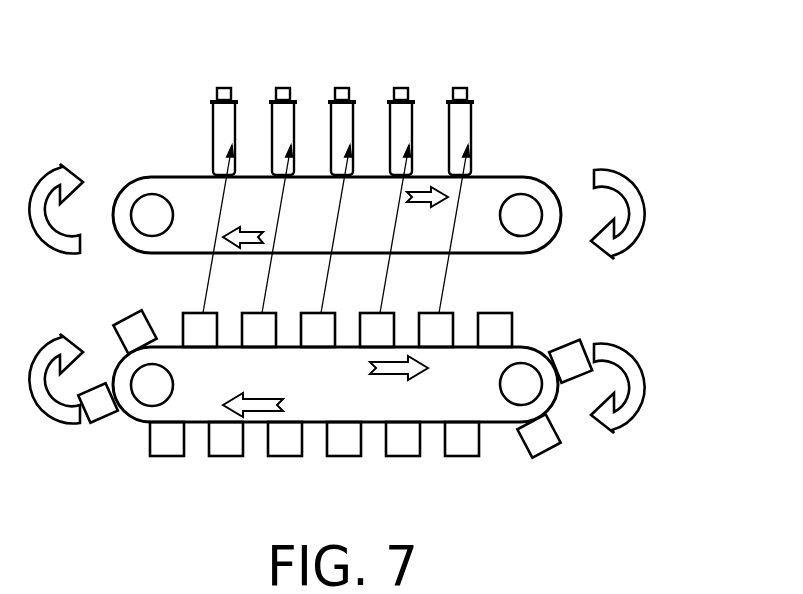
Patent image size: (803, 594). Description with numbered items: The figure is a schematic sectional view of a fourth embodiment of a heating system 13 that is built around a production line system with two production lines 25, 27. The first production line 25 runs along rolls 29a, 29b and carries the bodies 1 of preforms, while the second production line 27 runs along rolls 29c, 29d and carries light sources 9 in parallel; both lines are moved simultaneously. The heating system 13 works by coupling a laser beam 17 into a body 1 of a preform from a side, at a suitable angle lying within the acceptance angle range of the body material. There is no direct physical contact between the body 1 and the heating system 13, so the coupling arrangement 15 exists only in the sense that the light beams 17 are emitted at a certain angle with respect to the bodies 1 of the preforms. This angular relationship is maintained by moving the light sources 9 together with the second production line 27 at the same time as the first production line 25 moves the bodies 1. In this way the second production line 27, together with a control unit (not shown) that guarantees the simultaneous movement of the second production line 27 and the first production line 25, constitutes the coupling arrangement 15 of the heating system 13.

The body of preform 1 is at (212, 96).
The light source 9 is at (120, 326).
The heating system 13 is at (367, 164).
The coupling arrangement 15 is at (367, 366).
The laser beam 17 is at (446, 277).
The first production line 25 is at (185, 177).
The second production line 27 is at (533, 348).
The roll 29a is at (146, 208).
The roll 29b is at (522, 208).
The roll 29c is at (152, 384).
The roll 29d is at (512, 385).